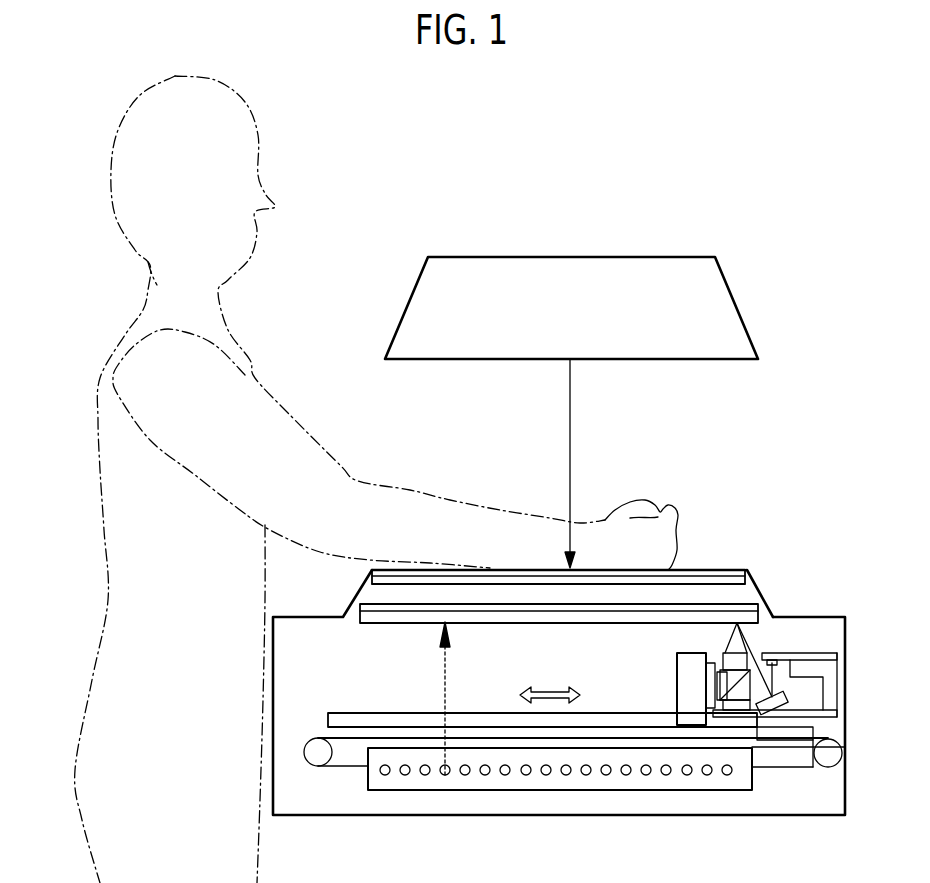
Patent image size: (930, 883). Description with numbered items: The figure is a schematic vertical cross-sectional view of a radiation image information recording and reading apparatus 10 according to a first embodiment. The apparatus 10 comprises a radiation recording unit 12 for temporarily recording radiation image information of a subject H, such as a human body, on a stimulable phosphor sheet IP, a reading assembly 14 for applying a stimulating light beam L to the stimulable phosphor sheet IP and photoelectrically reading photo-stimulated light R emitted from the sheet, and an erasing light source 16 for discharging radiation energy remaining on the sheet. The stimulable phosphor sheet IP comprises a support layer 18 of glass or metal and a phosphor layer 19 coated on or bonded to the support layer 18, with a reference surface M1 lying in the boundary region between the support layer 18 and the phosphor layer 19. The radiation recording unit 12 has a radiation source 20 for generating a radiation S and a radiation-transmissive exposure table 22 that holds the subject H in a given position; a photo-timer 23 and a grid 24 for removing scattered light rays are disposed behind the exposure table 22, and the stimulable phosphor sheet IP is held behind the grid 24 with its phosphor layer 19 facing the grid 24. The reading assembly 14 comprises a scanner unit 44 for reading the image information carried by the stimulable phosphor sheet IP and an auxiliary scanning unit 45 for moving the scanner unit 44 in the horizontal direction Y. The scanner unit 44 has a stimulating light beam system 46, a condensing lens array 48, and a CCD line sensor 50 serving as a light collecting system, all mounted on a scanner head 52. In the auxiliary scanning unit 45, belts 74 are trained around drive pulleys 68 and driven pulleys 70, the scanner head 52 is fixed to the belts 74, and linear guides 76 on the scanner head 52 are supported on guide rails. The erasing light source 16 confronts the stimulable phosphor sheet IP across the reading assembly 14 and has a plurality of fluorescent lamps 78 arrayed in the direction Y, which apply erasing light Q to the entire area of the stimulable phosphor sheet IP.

The radiation image information recording and reading apparatus 10 is at (777, 173).
The radiation recording unit 12 is at (726, 461).
The reading assembly 14 is at (767, 613).
The erasing light source 16 is at (362, 782).
The support layer 18 is at (483, 624).
The phosphor layer 19 is at (521, 612).
The radiation source 20 is at (683, 264).
The exposure table 22 is at (713, 569).
The photo-timer 23 is at (630, 572).
The grid 24 is at (470, 582).
The scanner unit 44 is at (657, 661).
The auxiliary scanning unit 45 is at (806, 800).
The stimulating light beam system 46 is at (792, 649).
The condensing lens array 48 is at (752, 692).
The CCD line sensor 50 is at (662, 682).
The scanner head 52 is at (825, 706).
The drive pulley 68 is at (826, 761).
The driven pulley 70 is at (312, 752).
The belt 74 is at (763, 770).
The linear guide 76 is at (343, 723).
The fluorescent lamp 78 is at (445, 777).
The subject H is at (372, 520).
The radiation S is at (572, 418).
The reference surface M1 is at (549, 602).
The stimulable phosphor sheet IP is at (404, 630).
The erasing light Q is at (444, 700).
The direction Y is at (550, 684).
The photo-stimulated light R is at (731, 649).
The stimulating light beam L is at (747, 643).